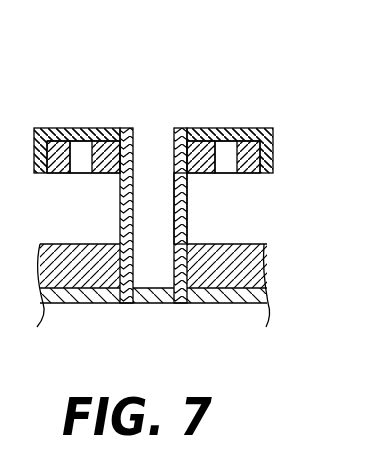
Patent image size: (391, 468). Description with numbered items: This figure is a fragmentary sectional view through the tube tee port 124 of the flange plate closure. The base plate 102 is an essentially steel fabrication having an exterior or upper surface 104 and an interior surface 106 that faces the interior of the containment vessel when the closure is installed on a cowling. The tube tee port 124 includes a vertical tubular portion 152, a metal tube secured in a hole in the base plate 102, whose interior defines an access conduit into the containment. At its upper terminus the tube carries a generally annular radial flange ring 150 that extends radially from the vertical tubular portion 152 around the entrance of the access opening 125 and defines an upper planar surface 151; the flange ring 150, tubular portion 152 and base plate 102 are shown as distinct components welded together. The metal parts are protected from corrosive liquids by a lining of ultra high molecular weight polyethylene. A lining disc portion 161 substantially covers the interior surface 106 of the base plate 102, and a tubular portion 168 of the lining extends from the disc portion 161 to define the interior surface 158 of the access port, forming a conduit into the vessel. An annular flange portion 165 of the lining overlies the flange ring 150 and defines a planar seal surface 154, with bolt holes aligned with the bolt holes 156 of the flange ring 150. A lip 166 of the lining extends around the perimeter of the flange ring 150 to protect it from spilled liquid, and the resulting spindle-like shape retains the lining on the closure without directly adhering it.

The base plate 102 is at (243, 268).
The exterior or upper surface 104 is at (228, 244).
The interior surface 106 is at (238, 304).
The tube tee port 124 is at (285, 92).
The access opening 125 is at (151, 138).
The radial flange ring 150 is at (103, 164).
The upper planar surface 151 is at (206, 131).
The vertical tubular portion 152 is at (188, 200).
The planar seal surface 154 is at (97, 128).
The bolt holes 156 is at (83, 159).
The interior surface 158 is at (120, 219).
The lining disc portion 161 is at (192, 304).
The annular flange portion 165 is at (203, 130).
The lip 166 is at (274, 137).
The tubular portion 168 is at (174, 261).